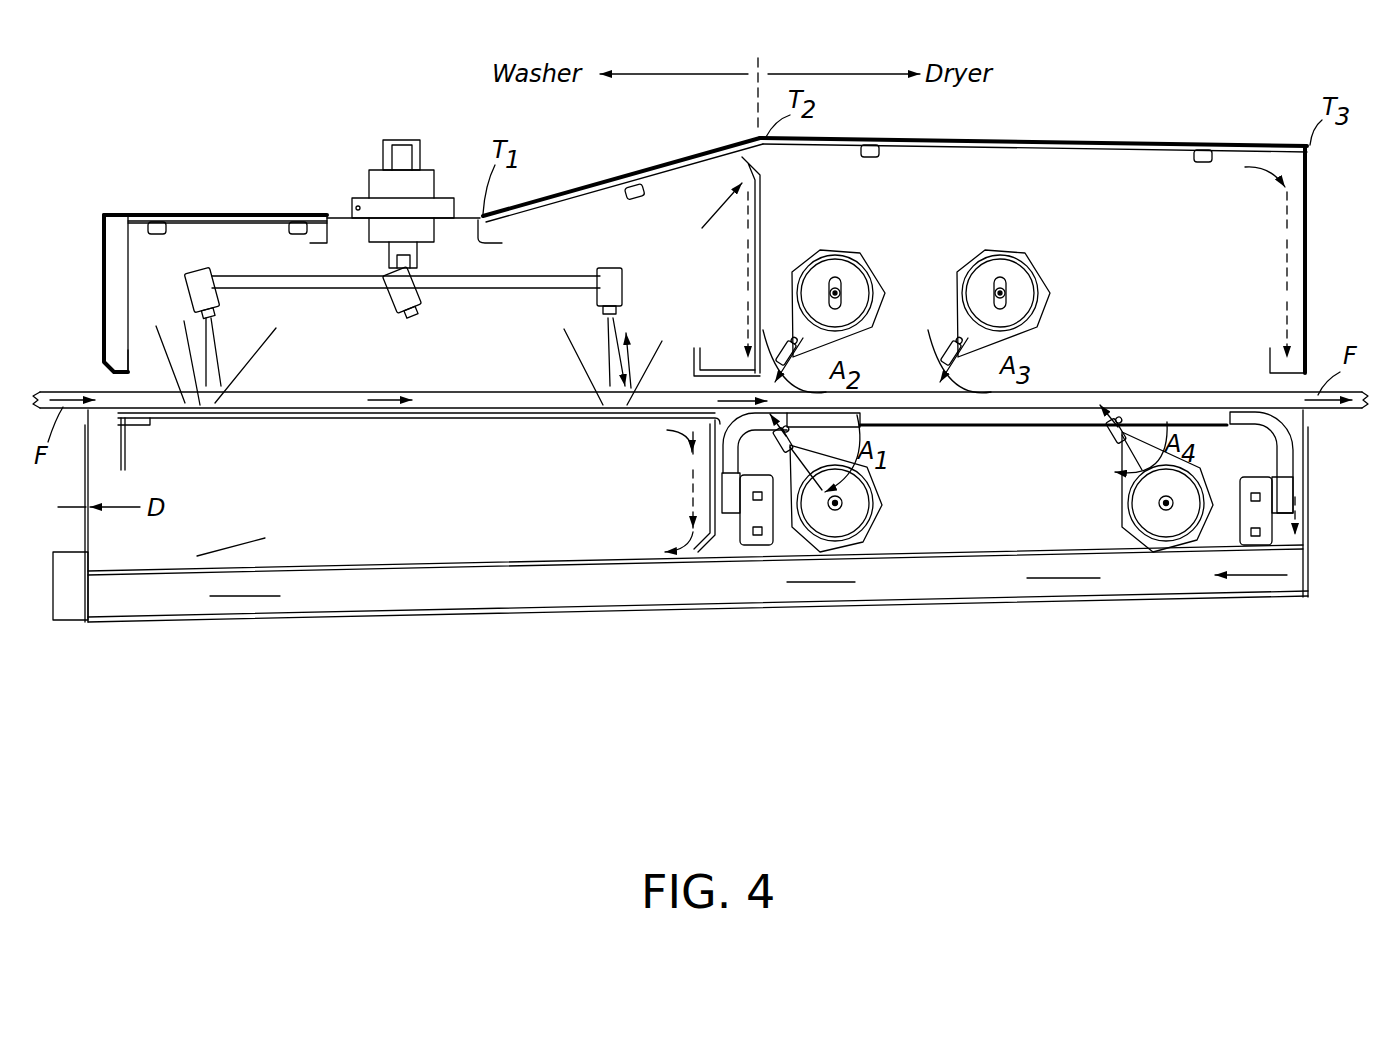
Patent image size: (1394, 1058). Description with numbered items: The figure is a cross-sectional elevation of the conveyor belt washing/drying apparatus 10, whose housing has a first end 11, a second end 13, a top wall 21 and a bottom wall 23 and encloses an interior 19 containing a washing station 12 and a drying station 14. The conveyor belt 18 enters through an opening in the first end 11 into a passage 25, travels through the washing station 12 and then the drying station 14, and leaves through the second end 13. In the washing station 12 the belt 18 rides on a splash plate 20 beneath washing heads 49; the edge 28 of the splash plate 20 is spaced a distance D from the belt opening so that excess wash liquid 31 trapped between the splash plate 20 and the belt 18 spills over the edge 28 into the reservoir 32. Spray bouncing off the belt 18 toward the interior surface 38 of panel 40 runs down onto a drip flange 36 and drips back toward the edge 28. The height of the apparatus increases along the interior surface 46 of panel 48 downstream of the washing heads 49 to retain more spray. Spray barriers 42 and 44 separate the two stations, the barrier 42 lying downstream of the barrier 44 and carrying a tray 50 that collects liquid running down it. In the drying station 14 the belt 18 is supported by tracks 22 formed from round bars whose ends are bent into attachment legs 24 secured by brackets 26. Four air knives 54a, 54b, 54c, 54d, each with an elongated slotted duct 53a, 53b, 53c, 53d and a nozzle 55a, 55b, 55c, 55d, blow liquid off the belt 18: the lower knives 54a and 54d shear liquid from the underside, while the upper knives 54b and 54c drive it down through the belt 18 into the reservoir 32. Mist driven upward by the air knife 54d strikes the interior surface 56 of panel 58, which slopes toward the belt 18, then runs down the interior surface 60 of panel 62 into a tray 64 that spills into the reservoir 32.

The conveyor belt washing/drying apparatus 10 is at (222, 727).
The first end 11 is at (85, 533).
The washing station 12 is at (427, 650).
The second end 13 is at (1305, 570).
The drying station 14 is at (1120, 650).
The conveyor belt 18 is at (67, 390).
The interior 19 is at (598, 252).
The splash plate 20 is at (172, 420).
The top wall 21 is at (1035, 140).
The tracks 22 is at (1028, 426).
The bottom wall 23 is at (556, 616).
The attachment legs 24 is at (745, 437).
The passage 25 is at (112, 385).
The brackets 26 is at (757, 548).
The edge 28 is at (110, 413).
The wash liquid 31 is at (587, 360).
The reservoir 32 is at (307, 595).
The drip flange 36 is at (123, 367).
The interior surface 38 is at (107, 262).
The panel 40 is at (103, 232).
The spray barrier 42 is at (763, 193).
The spray barrier 44 is at (712, 505).
The interior surface 46 is at (644, 223).
The panel 48 is at (660, 163).
The washing heads 49 is at (358, 198).
The tray 50 is at (725, 368).
The elongated duct 53a is at (862, 546).
The elongated duct 53b is at (885, 300).
The elongated duct 53c is at (1030, 270).
The elongated duct 53d is at (1175, 548).
The air knife 54a is at (885, 505).
The air knife 54b is at (873, 260).
The air knife 54c is at (1040, 295).
The air knife 54d is at (1124, 505).
The air nozzle 55a is at (777, 437).
The air nozzle 55b is at (783, 347).
The air nozzle 55c is at (937, 367).
The air nozzle 55d is at (1125, 420).
The interior surface 56 is at (1040, 153).
The panel 58 is at (1153, 143).
The interior surface 60 is at (1303, 258).
The panel 62 is at (1307, 178).
The tray 64 is at (1290, 352).